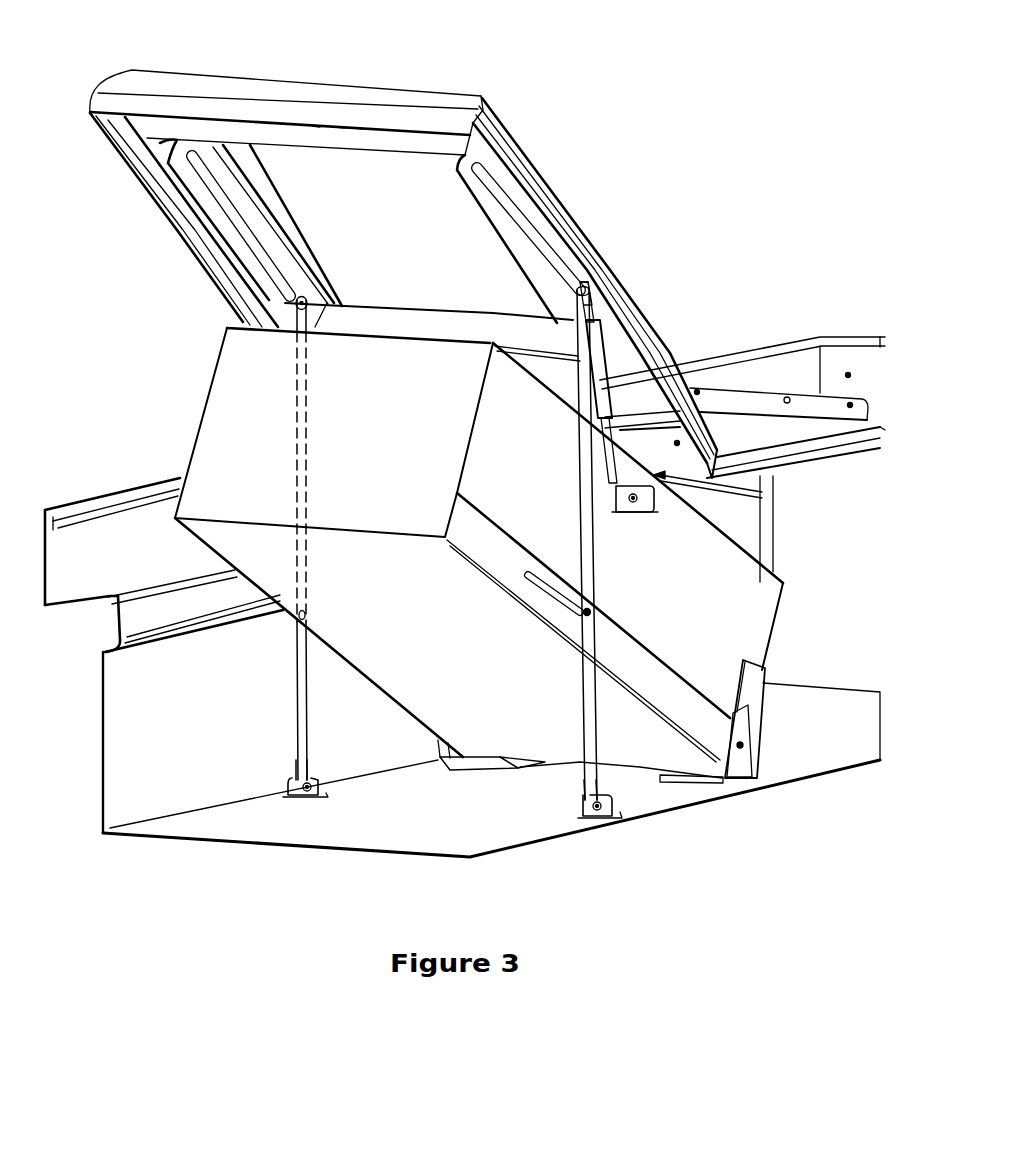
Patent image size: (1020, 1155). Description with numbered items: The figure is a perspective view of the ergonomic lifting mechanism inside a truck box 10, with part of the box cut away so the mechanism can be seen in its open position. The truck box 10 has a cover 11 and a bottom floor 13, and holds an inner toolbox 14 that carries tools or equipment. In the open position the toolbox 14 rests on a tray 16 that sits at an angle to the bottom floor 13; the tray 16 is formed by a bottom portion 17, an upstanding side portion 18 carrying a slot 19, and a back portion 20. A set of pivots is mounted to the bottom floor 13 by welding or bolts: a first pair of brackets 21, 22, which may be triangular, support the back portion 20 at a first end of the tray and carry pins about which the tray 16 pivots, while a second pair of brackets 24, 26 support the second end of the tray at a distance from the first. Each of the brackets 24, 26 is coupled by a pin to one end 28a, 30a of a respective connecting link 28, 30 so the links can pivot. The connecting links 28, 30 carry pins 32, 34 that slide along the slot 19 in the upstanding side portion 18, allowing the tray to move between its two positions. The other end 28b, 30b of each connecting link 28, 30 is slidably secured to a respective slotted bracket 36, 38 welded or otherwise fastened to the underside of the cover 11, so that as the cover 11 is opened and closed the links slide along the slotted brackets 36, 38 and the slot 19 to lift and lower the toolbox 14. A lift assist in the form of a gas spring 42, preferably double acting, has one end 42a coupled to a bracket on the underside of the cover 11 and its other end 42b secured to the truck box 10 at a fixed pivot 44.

The truck box 10 is at (740, 158).
The cover 11 is at (458, 92).
The bottom floor 13 is at (388, 848).
The toolbox 14 is at (168, 425).
The tray 16 is at (400, 698).
The bottom portion 17 is at (441, 618).
The upstanding side portion 18 is at (662, 688).
The slot 19 is at (543, 587).
The back portion 20 is at (752, 697).
The bracket 21 is at (740, 767).
The bracket 22 is at (435, 758).
The bracket 24 is at (610, 815).
The bracket 26 is at (293, 795).
The connecting link 28 is at (582, 705).
The one end of connecting link 28a is at (558, 808).
The other end of connecting link 28b is at (556, 368).
The connecting link 30 is at (297, 695).
The one end of connecting link 30a is at (271, 761).
The other end of connecting link 30b is at (268, 326).
The pin 32 is at (592, 618).
The pin 34 is at (313, 612).
The slotted bracket 36 is at (520, 247).
The slotted bracket 38 is at (248, 263).
The gas spring 42 is at (612, 375).
The one end of gas spring 42a is at (606, 299).
The other end of gas spring 42b is at (767, 497).
The fixed pivot 44 is at (645, 500).